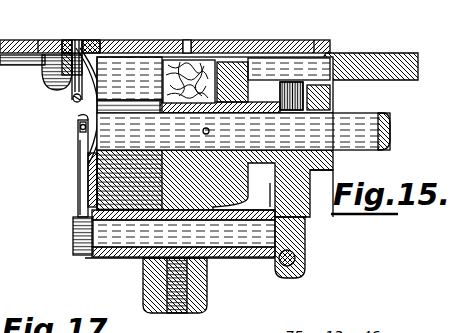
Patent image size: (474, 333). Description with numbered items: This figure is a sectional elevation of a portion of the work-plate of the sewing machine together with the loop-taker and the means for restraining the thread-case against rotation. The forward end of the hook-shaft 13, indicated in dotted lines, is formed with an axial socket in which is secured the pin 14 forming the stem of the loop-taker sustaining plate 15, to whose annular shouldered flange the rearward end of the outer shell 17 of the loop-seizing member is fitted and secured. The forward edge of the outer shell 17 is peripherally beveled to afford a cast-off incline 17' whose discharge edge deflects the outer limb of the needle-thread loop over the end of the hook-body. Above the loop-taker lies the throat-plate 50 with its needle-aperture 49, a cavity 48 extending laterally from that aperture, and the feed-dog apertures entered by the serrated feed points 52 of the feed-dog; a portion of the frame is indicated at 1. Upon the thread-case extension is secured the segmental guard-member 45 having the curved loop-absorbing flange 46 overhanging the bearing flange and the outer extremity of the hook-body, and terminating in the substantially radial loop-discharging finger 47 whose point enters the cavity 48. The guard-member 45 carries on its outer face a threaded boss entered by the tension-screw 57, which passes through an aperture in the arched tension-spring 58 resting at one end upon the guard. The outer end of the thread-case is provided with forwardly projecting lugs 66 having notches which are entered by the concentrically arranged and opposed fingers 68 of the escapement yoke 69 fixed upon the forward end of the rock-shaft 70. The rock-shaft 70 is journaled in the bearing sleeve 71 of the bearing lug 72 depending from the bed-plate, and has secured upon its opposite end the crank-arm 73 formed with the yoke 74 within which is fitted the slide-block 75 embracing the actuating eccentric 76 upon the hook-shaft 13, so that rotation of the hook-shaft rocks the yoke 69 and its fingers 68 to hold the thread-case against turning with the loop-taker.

The frame rod 1 is at (396, 55).
The hook-shaft 13 is at (352, 120).
The pin 14 is at (227, 122).
The loop-taker sustaining plate 15 is at (165, 58).
The outer shell 17 is at (215, 167).
The cast-off incline 17' is at (68, 170).
The segmental guard-member 45 is at (77, 117).
The loop-absorbing flange 46 is at (102, 93).
The loop-discharging finger 47 is at (45, 70).
The cavity 48 is at (78, 62).
The needle-aperture 49 is at (82, 53).
The throat-plate 50 is at (30, 52).
The serrated feed points 52 is at (100, 43).
The tension-screw 57 is at (72, 98).
The arched tension-spring 58 is at (80, 82).
The forwardly projecting lugs 66 is at (81, 125).
The fingers 68 is at (83, 132).
The escapement yoke 69 is at (80, 184).
The rock-shaft 70 is at (298, 233).
The bearing sleeve 71 is at (125, 258).
The bearing lug 72 is at (208, 297).
The crank-arm 73 is at (306, 194).
The yoke 74 is at (292, 103).
The slide-block 75 is at (281, 95).
The actuating eccentric 76 is at (280, 168).